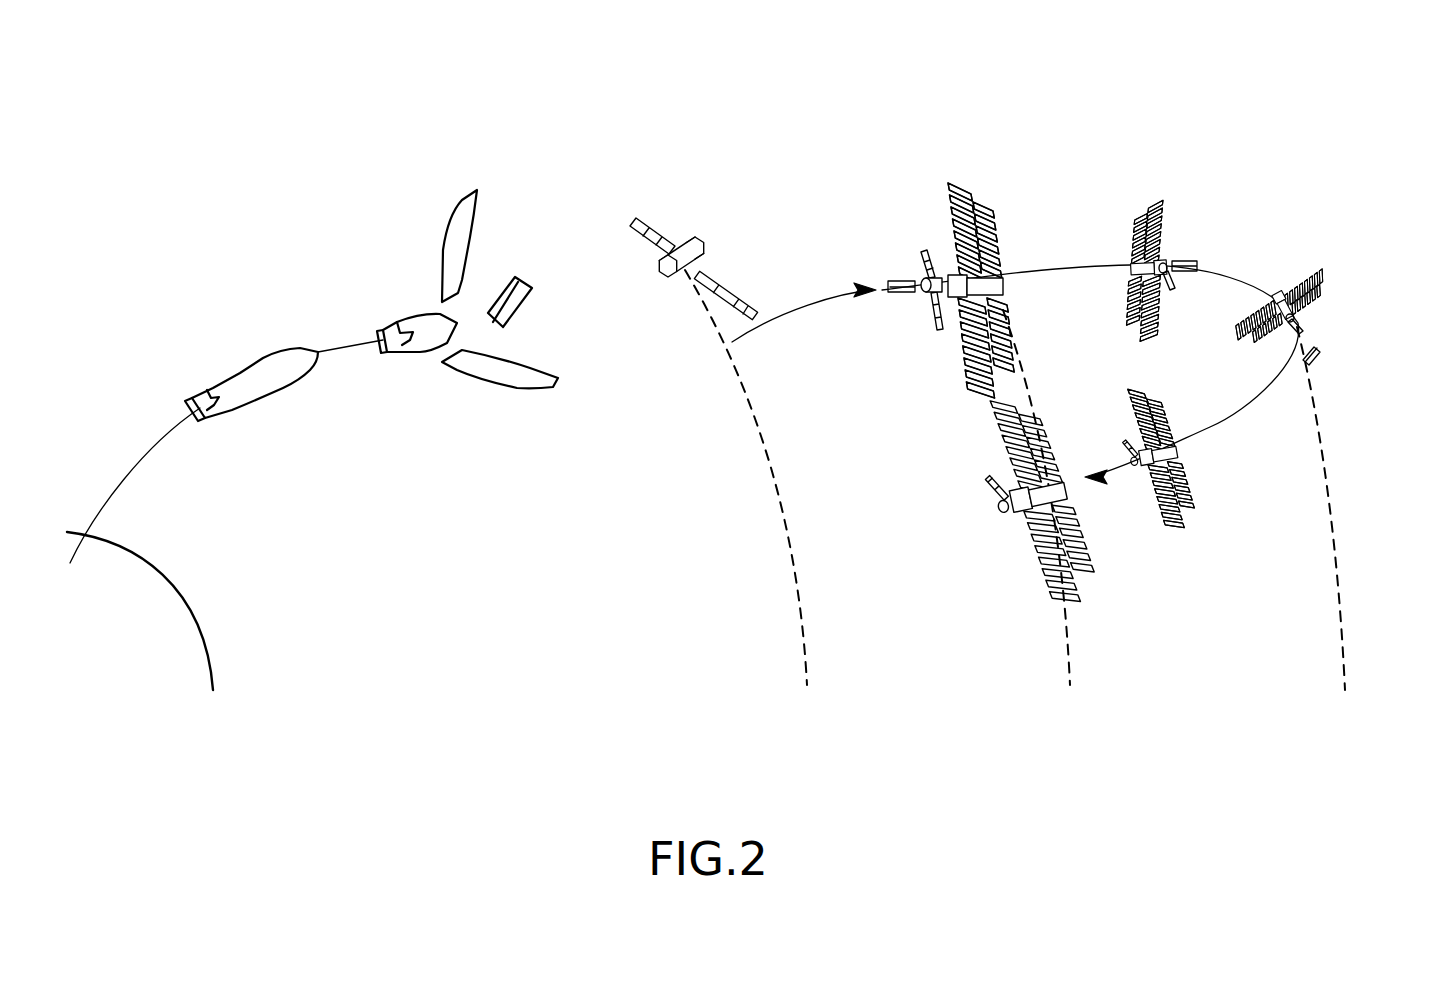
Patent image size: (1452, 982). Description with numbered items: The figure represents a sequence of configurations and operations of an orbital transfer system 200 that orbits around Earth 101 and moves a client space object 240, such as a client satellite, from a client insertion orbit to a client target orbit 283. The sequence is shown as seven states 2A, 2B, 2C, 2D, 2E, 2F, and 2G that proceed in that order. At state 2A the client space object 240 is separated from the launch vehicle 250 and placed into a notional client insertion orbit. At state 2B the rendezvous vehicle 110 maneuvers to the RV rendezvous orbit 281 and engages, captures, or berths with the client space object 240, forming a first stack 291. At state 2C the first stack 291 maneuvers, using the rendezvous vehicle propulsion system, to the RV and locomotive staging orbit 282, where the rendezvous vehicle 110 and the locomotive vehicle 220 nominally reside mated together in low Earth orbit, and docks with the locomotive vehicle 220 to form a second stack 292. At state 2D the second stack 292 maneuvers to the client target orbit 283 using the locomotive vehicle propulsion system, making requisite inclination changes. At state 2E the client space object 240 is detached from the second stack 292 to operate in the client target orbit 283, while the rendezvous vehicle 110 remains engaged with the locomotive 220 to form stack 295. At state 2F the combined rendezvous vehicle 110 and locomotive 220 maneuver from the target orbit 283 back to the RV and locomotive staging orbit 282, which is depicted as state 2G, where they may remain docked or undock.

The orbital transfer system 200 is at (343, 168).
The launch vehicle 250 is at (249, 351).
The client space object 240 is at (520, 278).
The Earth 101 is at (202, 708).
The rendezvous vehicle 110 is at (727, 283).
The locomotive vehicle 220 is at (1138, 223).
The RV rendezvous orbit 281 is at (805, 618).
The RV and locomotive staging orbit 282 is at (1070, 680).
The client target orbit 283 is at (1343, 640).
The first stack 291 is at (913, 210).
The second stack 292 is at (1181, 229).
The stack 295 is at (1346, 270).
The state 2A is at (393, 403).
The state 2B is at (722, 236).
The state 2C is at (977, 174).
The state 2D is at (1177, 184).
The state 2E is at (1313, 254).
The state 2F is at (1135, 509).
The state 2G is at (1001, 544).